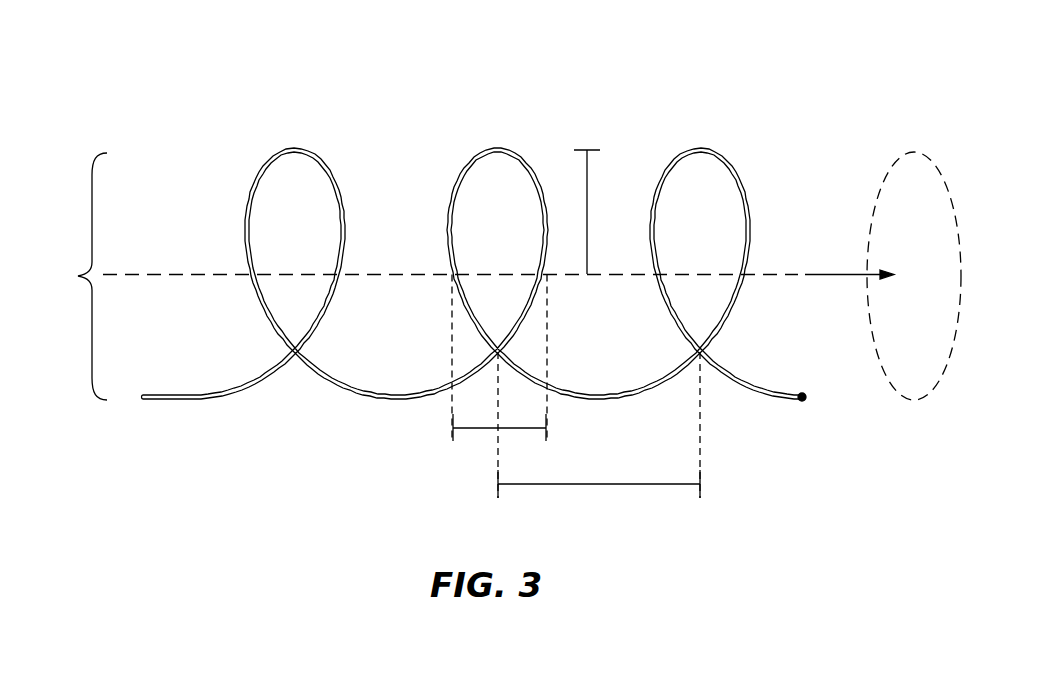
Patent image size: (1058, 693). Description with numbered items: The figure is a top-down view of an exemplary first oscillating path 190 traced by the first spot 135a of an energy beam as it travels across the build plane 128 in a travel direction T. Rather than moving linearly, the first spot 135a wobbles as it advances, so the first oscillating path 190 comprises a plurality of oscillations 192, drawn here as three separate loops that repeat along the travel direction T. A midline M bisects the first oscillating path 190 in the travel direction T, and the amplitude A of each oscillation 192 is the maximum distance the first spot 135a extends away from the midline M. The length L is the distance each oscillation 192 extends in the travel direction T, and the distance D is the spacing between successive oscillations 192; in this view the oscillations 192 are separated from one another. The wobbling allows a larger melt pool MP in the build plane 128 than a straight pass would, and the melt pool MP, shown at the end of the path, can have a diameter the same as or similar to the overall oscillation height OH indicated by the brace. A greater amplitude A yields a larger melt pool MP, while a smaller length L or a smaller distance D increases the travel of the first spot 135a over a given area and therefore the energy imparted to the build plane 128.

The first oscillating path 190 is at (459, 219).
The oscillations 192 is at (450, 182).
The build plane 128 is at (180, 342).
The first spot 135a is at (806, 397).
The amplitude A is at (587, 186).
The length L is at (479, 429).
The distance between oscillations D is at (601, 485).
The midline M is at (775, 274).
The melt pool MP is at (884, 178).
The travel direction T is at (858, 276).
The overall oscillation height OH is at (75, 276).